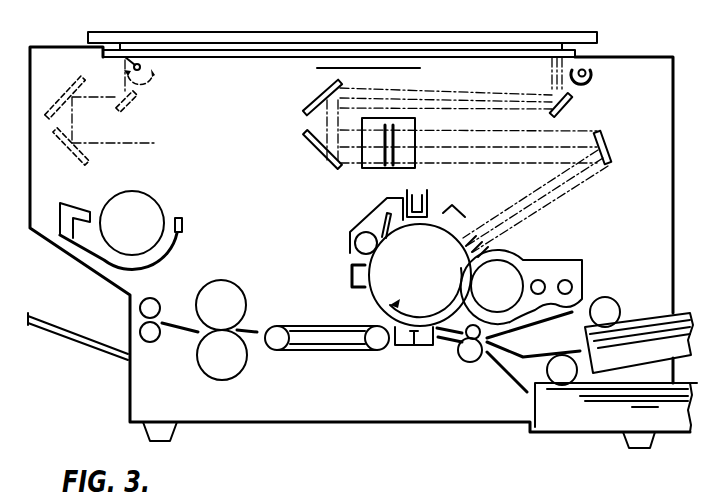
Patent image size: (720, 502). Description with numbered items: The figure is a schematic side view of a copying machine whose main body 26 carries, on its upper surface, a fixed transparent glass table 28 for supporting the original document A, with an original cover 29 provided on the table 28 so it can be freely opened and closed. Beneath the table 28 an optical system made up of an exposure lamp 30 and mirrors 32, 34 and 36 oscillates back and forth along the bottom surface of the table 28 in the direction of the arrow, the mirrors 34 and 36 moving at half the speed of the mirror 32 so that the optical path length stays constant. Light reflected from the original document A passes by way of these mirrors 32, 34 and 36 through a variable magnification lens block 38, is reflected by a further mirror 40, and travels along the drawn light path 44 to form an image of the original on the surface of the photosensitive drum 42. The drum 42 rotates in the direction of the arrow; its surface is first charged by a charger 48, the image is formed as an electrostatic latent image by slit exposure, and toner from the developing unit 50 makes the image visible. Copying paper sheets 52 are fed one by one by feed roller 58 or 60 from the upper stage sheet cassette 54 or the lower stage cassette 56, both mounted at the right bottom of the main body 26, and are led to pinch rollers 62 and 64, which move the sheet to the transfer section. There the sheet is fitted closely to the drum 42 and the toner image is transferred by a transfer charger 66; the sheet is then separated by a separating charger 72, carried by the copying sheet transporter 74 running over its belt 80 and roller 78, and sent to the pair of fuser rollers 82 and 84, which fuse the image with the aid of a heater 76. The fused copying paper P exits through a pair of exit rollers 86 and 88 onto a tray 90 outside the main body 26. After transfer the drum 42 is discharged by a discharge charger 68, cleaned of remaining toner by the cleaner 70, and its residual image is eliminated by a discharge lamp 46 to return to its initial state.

The main body 26 is at (677, 65).
The table 28 is at (577, 45).
The original cover 29 is at (163, 32).
The original document A is at (281, 46).
The exposure lamp 30 is at (586, 70).
The mirror 32 is at (568, 103).
The mirror 34 is at (320, 92).
The mirror 36 is at (322, 155).
The variable magnification lens block 38 is at (372, 168).
The mirror 40 is at (608, 147).
The photosensitive drum 42 is at (388, 295).
The light image path 44 is at (577, 181).
The discharge lamp 46 is at (428, 202).
The charger 48 is at (460, 212).
The developing unit 50 is at (528, 258).
The paper stack 52 is at (637, 320).
The upper stage sheet cassette 54 is at (658, 337).
The lower stage cassette 56 is at (672, 413).
The feed roller 58 is at (605, 297).
The feed roller 60 is at (565, 355).
The pinch roller 62 is at (463, 360).
The pinch roller 64 is at (483, 362).
The transfer charger 66 is at (416, 346).
The discharge charger 68 is at (350, 267).
The cleaner 70 is at (350, 232).
The separating charger 72 is at (392, 348).
The copying sheet transporter 74 is at (297, 326).
The heater 76 is at (212, 282).
The belt roller 78 is at (283, 334).
The belt 80 is at (347, 348).
The fuser roller 82 is at (232, 290).
The fuser roller 84 is at (231, 368).
The exit roller 86 is at (152, 336).
The exit roller 88 is at (152, 304).
The tray 90 is at (82, 347).
The copying paper P is at (680, 305).